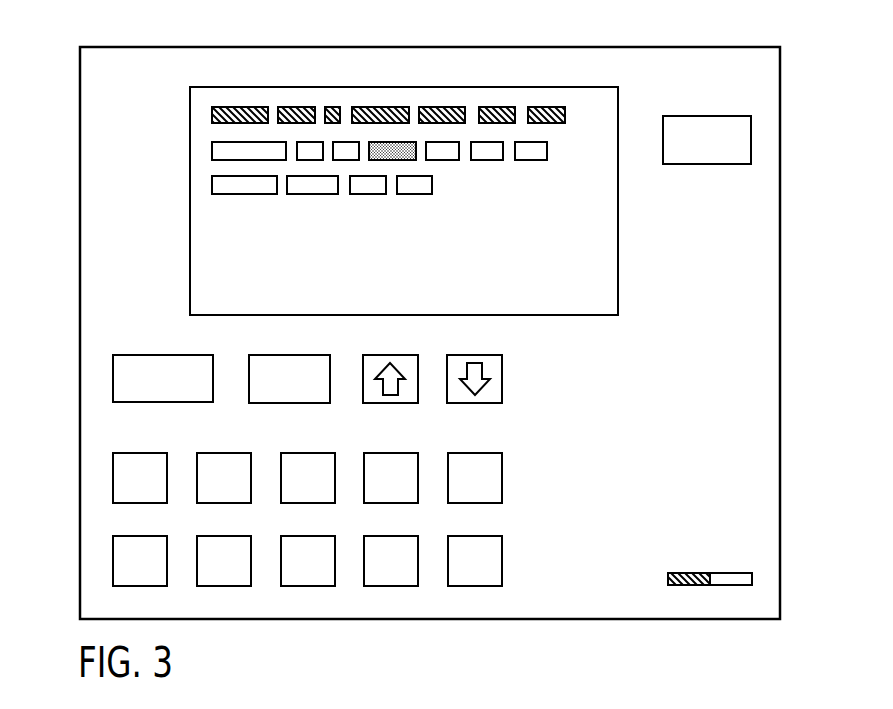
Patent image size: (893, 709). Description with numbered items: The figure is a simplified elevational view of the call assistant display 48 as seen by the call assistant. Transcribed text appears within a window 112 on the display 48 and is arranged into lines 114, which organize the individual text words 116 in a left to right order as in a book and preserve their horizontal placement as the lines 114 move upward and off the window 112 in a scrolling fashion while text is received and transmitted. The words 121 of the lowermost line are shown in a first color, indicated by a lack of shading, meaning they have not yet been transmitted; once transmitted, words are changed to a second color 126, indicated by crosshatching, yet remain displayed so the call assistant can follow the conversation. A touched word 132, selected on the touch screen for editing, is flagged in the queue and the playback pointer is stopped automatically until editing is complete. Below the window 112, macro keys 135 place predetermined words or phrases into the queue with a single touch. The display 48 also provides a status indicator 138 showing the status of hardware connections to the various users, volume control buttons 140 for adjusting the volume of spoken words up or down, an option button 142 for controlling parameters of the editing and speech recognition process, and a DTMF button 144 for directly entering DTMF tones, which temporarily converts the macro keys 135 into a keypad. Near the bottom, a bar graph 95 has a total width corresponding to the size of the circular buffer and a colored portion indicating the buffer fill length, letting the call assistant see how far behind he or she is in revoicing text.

The call assistant display 48 is at (792, 36).
The window 112 is at (519, 88).
The lines 114 is at (340, 122).
The text words 116 is at (328, 107).
The second color 126 is at (439, 107).
The touched word 132 is at (386, 160).
The words of the lowermost line 121 is at (320, 194).
The status indicator 138 is at (751, 140).
The option button 142 is at (113, 378).
The DTMF button 144 is at (272, 403).
The volume control buttons 140 is at (488, 403).
The macro key 135 is at (232, 503).
The bar graph 95 is at (747, 573).